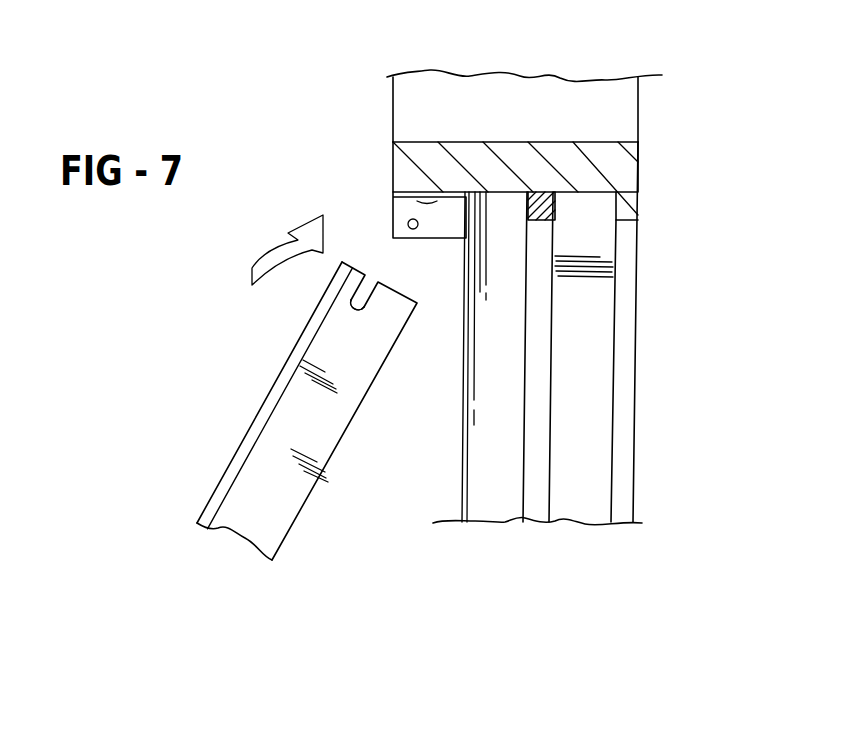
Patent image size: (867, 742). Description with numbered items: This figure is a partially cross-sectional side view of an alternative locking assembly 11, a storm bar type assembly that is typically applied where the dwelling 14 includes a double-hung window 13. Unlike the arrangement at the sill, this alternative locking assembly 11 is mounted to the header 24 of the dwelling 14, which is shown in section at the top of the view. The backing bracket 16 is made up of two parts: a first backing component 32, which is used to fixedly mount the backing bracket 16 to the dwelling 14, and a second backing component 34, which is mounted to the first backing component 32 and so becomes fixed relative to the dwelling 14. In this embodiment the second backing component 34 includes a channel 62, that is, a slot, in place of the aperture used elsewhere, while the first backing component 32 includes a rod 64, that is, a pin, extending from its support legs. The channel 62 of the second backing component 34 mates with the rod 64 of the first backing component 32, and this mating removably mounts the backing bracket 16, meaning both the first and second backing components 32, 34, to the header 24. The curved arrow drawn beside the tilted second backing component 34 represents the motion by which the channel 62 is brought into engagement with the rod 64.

The alternative locking assembly 11 is at (257, 323).
The double-hung window 13 is at (592, 462).
The dwelling 14 is at (430, 97).
The backing bracket 16 is at (265, 317).
The header 24 is at (617, 148).
The first backing component 32 is at (449, 222).
The second backing component 34 is at (322, 450).
The channel 62 is at (356, 301).
The rod 64 is at (416, 222).